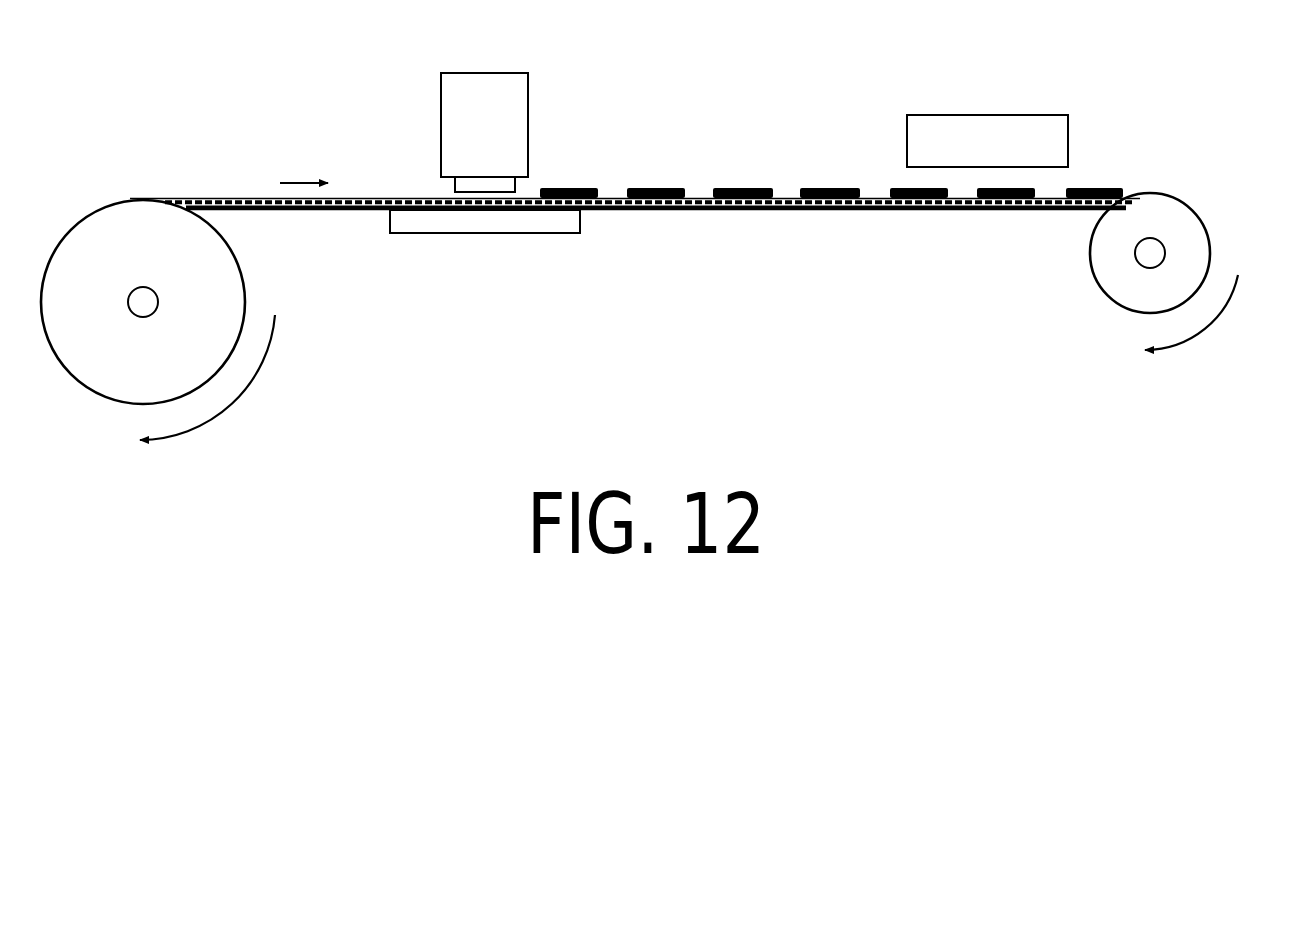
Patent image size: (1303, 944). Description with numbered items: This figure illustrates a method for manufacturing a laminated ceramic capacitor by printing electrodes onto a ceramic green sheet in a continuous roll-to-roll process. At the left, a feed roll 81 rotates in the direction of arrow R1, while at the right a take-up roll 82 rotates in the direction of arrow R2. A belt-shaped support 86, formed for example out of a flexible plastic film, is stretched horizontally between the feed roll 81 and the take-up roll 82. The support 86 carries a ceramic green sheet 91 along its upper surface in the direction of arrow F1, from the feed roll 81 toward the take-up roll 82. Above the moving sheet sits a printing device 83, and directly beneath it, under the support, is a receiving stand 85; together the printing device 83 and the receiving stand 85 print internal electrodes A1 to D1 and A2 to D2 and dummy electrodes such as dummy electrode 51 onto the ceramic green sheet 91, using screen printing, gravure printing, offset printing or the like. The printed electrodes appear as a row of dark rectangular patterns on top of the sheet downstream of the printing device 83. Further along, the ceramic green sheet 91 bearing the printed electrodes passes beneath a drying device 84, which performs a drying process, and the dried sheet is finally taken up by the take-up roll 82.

The feed roll 81 is at (100, 215).
The take-up roll 82 is at (1183, 203).
The printing device 83 is at (500, 82).
The drying device 84 is at (988, 115).
The receiving stand 85 is at (492, 227).
The belt-shaped support 86 is at (327, 212).
The ceramic green sheet 91 is at (230, 198).
The dummy electrode 51 is at (643, 190).
The arrow F1 is at (302, 182).
The arrow R1 is at (242, 402).
The arrow R2 is at (1220, 330).